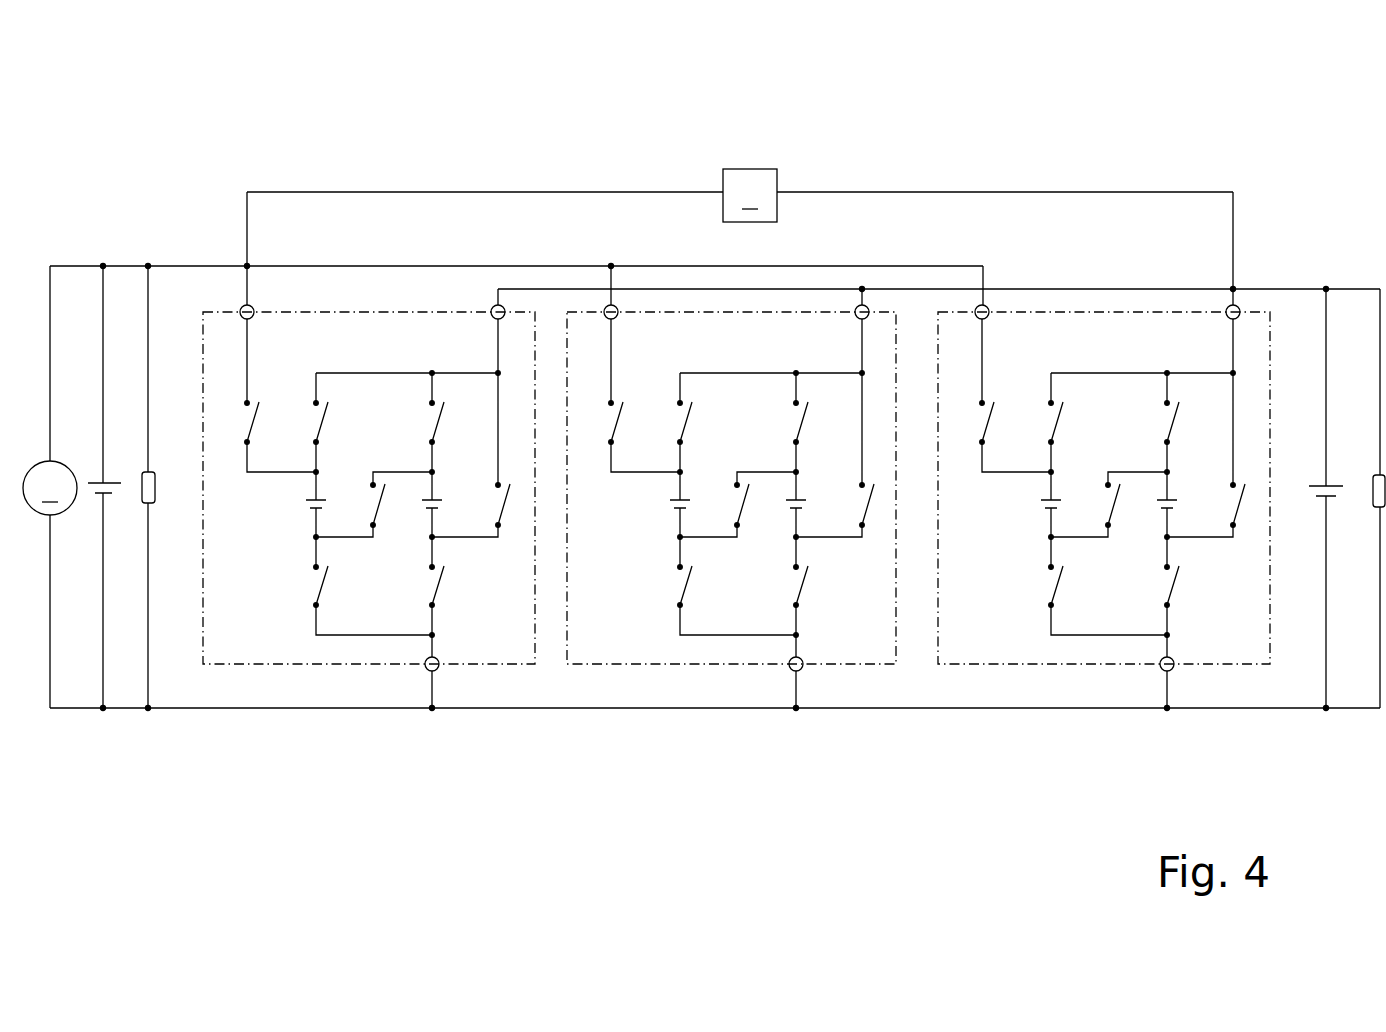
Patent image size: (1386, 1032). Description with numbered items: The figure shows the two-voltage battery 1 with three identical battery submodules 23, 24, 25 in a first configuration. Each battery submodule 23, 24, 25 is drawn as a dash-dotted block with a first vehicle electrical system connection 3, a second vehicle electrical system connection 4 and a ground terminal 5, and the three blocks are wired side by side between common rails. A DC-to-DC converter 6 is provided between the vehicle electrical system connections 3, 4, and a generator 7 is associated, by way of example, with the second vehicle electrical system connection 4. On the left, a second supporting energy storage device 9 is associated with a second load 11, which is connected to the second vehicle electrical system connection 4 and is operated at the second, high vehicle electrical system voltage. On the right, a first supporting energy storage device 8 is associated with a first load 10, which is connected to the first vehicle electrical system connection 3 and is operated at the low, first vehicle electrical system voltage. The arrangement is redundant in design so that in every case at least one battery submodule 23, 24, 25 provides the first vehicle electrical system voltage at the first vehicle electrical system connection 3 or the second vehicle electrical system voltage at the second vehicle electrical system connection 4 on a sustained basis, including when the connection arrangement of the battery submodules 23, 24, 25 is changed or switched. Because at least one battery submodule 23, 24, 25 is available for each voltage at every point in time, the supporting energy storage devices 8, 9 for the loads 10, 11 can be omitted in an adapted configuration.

The two-voltage battery 1 is at (945, 126).
The first vehicle electrical system connection 3 is at (494, 306).
The second vehicle electrical system connection 4 is at (243, 307).
The ground terminal 5 is at (427, 668).
The DC-to-DC converter 6 is at (750, 195).
The generator 7 is at (50, 488).
The first supporting energy storage device 8 is at (1313, 507).
The second supporting energy storage device 9 is at (93, 508).
The first load 10 is at (1378, 497).
The second load 11 is at (160, 508).
The battery submodule 23 is at (360, 303).
The battery submodule 24 is at (796, 305).
The battery submodule 25 is at (1102, 307).